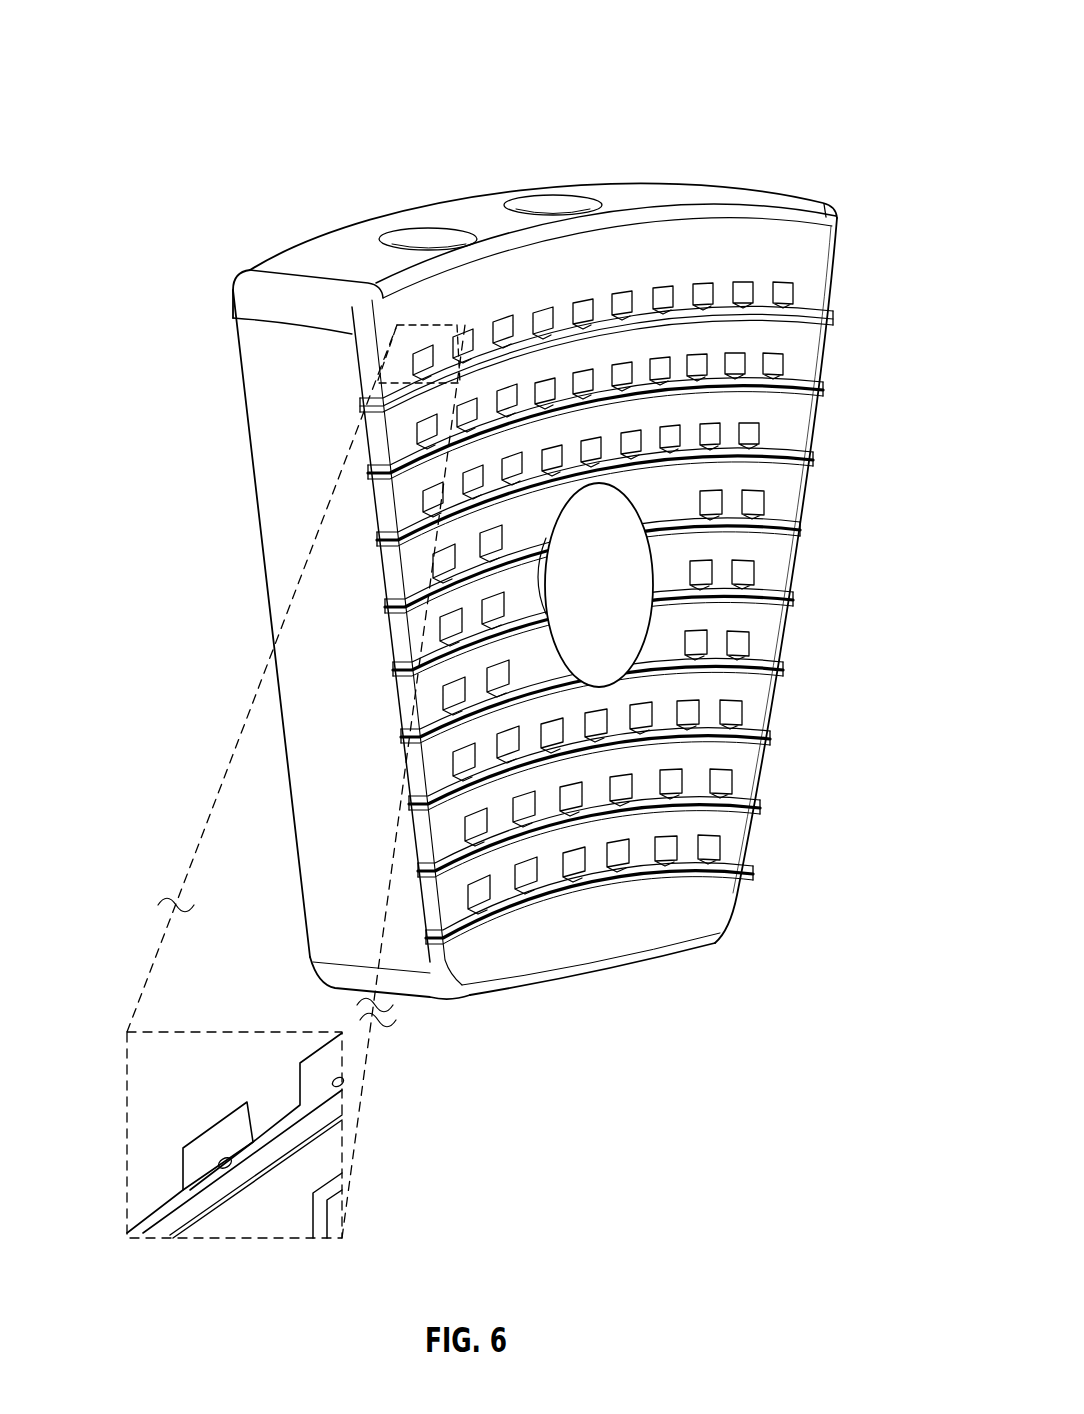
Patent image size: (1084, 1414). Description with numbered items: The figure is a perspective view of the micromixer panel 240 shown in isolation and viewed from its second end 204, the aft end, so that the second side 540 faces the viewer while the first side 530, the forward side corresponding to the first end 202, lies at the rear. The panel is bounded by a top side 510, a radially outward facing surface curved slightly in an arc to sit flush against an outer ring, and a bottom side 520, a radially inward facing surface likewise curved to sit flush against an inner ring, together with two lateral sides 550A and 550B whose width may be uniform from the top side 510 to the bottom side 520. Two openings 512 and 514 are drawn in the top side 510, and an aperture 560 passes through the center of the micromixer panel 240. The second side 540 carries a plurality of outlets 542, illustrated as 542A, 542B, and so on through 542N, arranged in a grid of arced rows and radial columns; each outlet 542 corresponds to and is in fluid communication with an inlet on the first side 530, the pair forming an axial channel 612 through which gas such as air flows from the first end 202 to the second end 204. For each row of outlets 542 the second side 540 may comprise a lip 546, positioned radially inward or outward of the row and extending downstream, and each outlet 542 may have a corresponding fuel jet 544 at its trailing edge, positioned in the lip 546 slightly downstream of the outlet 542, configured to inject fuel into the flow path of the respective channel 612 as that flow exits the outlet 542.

The micromixer panel 240 is at (234, 34).
The first end 202 is at (160, 600).
The second end 204 is at (833, 618).
The top side 510 is at (336, 252).
The first opening 512 is at (428, 240).
The second opening 514 is at (553, 205).
The bottom side 520 is at (643, 957).
The first side 530 is at (240, 400).
The second side 540 is at (678, 233).
The outlets 542 is at (210, 1157).
The outlet 542A is at (790, 300).
The outlet 542B is at (743, 295).
The outlet 542N is at (478, 895).
The fuel jet 544 is at (237, 1164).
The lip 546 is at (200, 1210).
The lateral side 550A is at (325, 858).
The lateral side 550B is at (775, 696).
The aperture 560 is at (626, 580).
The axial channel 612 is at (580, 303).